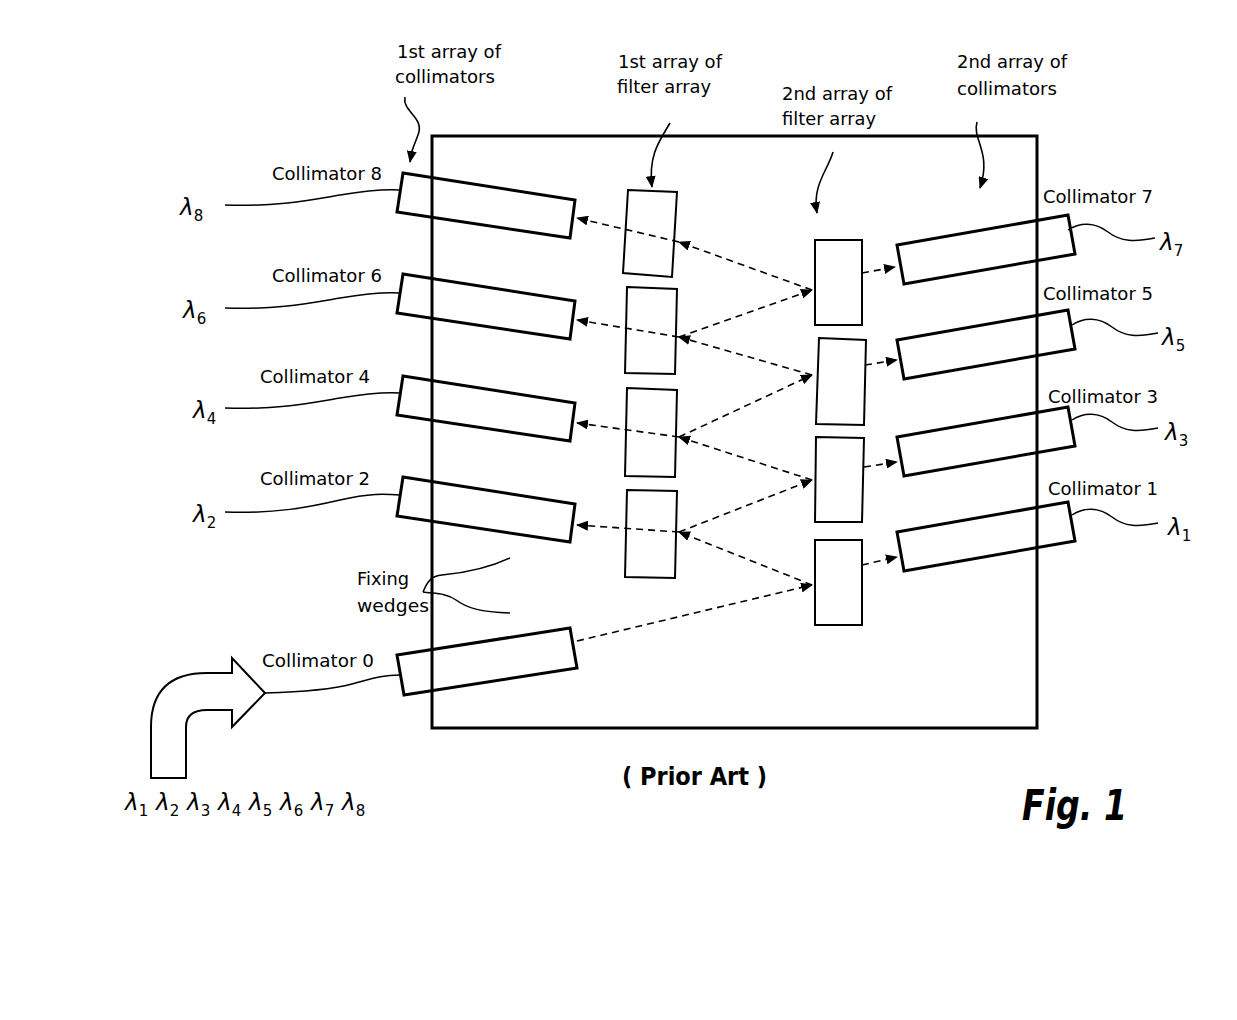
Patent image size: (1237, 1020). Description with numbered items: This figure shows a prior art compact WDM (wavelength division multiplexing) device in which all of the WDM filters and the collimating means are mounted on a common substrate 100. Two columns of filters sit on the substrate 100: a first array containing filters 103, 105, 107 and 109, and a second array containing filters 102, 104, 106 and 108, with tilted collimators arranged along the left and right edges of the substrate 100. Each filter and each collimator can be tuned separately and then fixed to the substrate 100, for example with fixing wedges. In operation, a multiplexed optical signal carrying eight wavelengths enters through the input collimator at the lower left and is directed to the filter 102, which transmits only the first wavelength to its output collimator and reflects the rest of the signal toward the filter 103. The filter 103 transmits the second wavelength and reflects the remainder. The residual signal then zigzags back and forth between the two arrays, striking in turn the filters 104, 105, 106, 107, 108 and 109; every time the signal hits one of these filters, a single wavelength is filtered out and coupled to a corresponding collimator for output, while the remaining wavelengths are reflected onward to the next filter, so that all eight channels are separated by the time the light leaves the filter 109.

The substrate 100 is at (665, 724).
The filter 102 is at (838, 582).
The filter 103 is at (651, 534).
The filter 104 is at (839, 479).
The filter 105 is at (651, 432).
The filter 106 is at (841, 381).
The filter 107 is at (651, 330).
The filter 108 is at (838, 282).
The filter 109 is at (650, 233).